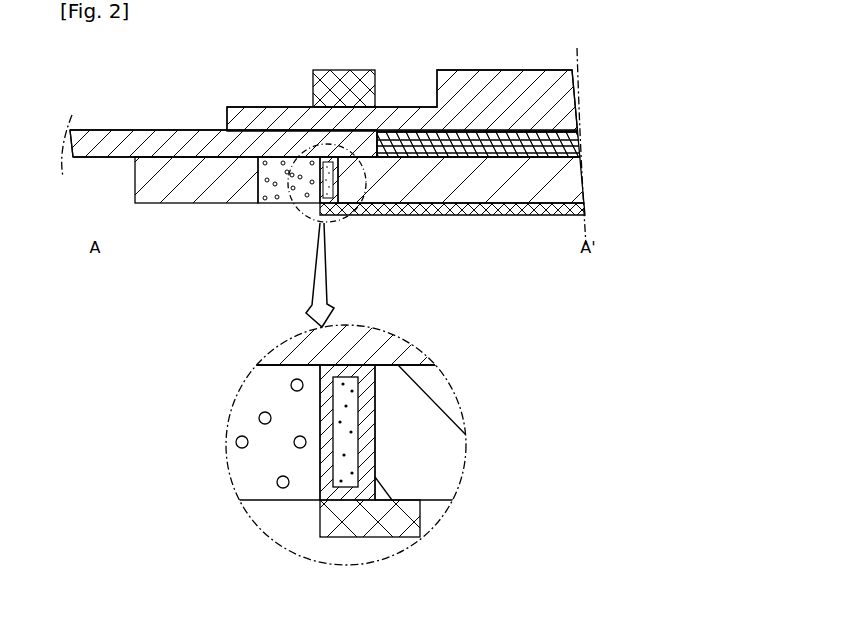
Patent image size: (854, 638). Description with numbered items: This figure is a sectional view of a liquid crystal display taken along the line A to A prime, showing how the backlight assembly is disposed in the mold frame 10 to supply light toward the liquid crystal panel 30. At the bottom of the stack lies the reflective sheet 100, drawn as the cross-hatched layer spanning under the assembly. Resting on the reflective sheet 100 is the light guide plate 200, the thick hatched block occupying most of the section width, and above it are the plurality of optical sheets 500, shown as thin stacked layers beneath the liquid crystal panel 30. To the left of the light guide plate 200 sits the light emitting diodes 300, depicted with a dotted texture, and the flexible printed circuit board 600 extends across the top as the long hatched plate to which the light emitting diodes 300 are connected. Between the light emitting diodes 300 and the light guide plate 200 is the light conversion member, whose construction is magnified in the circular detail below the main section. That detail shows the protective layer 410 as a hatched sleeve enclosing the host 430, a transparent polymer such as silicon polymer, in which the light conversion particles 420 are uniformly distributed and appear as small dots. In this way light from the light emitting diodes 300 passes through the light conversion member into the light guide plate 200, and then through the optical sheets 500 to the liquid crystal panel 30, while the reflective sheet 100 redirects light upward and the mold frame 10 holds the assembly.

The mold frame 10 is at (168, 195).
The liquid crystal panel 30 is at (500, 80).
The reflective sheet 100 is at (388, 210).
The light guide plate 200 is at (451, 185).
The light emitting diodes 300 is at (273, 195).
The protective layer 410 is at (363, 442).
The light conversion particles 420 is at (352, 386).
The host 430 is at (338, 413).
The optical sheets 500 is at (505, 150).
The flexible printed circuit board 600 is at (167, 140).